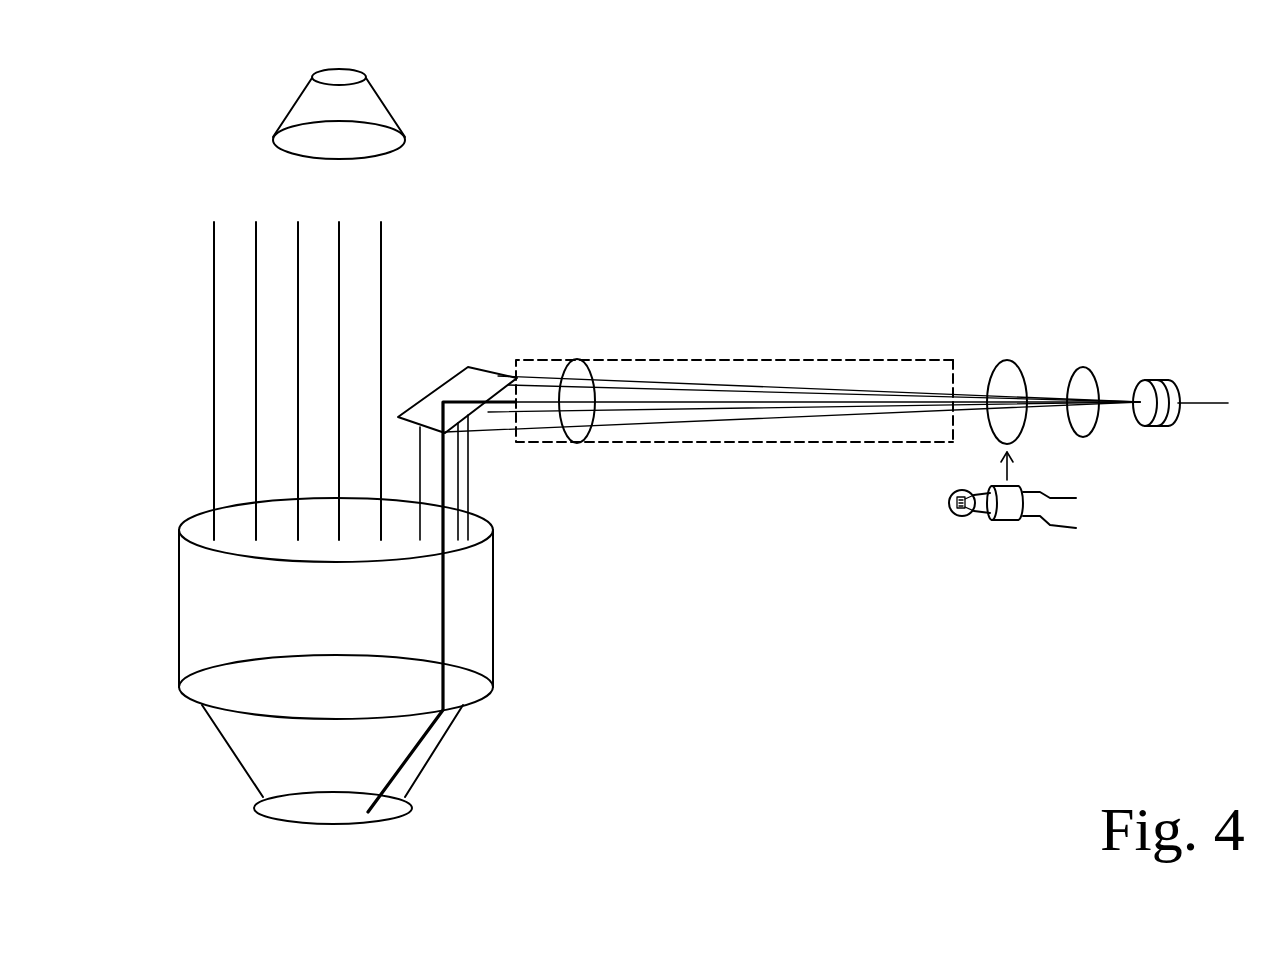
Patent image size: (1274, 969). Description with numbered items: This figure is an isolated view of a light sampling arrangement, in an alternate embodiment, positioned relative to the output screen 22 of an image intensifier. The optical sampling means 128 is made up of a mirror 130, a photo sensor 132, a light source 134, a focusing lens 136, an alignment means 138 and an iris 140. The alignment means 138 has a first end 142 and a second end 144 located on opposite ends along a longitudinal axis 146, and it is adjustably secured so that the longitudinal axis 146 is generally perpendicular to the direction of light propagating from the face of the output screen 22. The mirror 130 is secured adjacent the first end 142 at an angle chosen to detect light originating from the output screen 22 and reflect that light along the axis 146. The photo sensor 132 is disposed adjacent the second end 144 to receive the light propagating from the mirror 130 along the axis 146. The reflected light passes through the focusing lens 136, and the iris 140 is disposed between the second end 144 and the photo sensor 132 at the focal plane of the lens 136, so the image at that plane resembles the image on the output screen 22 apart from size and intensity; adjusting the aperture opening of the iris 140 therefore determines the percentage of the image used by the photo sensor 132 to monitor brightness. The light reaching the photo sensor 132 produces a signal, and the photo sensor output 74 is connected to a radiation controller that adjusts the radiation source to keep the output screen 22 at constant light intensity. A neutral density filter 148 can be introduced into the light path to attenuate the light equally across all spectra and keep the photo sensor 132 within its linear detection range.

The output screen 22 is at (307, 805).
The photo sensor output 74 is at (1205, 403).
The optical sampling means 128 is at (792, 375).
The mirror 130 is at (468, 380).
The photo sensor 132 is at (1157, 380).
The light source 134 is at (1002, 522).
The focusing lens 136 is at (577, 360).
The alignment means 138 is at (873, 358).
The iris 140 is at (1010, 360).
The first end 142 is at (507, 438).
The second end 144 is at (953, 355).
The longitudinal axis 146 is at (698, 400).
The neutral density filter 148 is at (1083, 368).